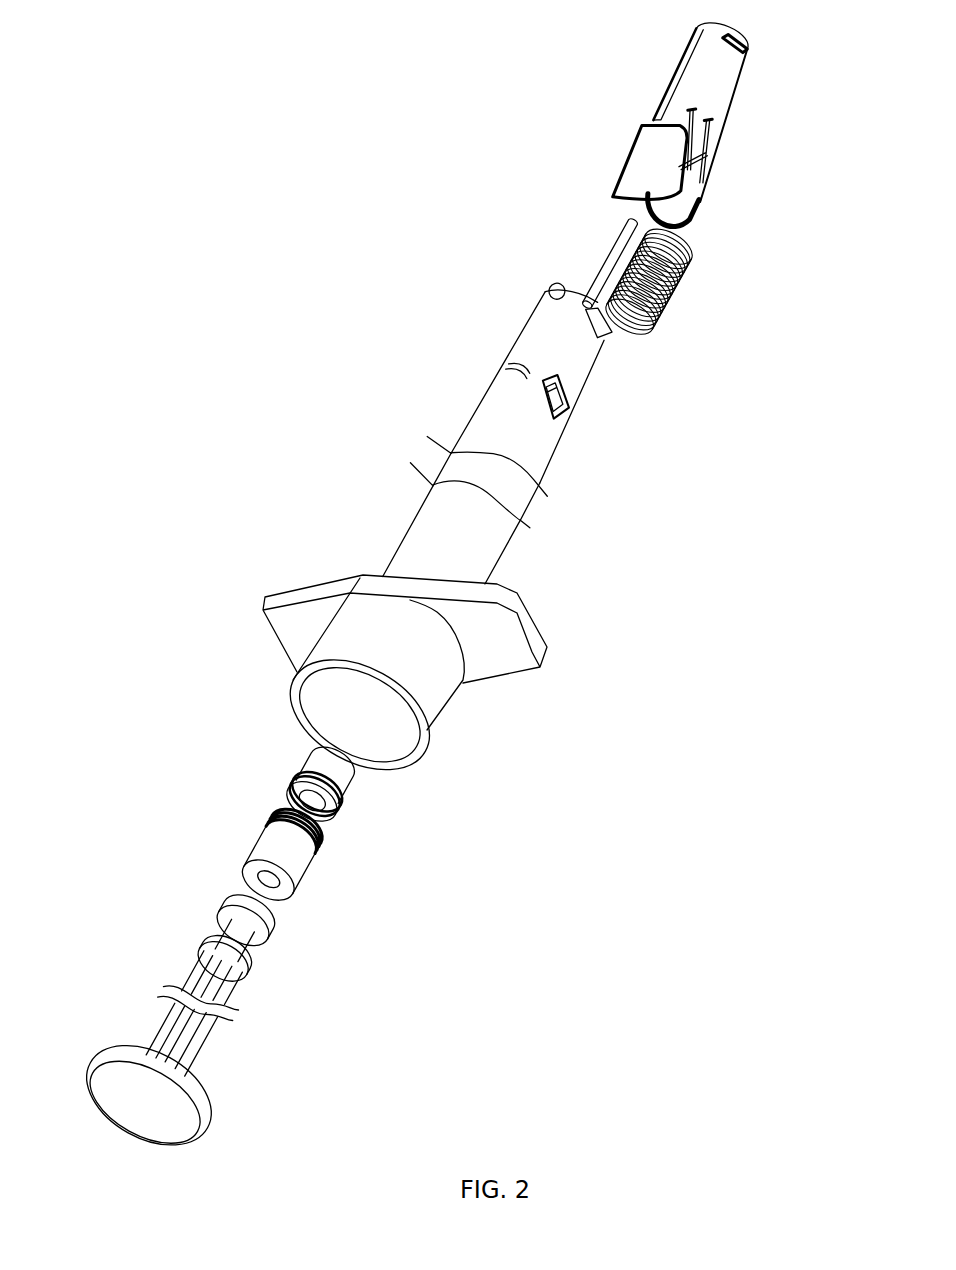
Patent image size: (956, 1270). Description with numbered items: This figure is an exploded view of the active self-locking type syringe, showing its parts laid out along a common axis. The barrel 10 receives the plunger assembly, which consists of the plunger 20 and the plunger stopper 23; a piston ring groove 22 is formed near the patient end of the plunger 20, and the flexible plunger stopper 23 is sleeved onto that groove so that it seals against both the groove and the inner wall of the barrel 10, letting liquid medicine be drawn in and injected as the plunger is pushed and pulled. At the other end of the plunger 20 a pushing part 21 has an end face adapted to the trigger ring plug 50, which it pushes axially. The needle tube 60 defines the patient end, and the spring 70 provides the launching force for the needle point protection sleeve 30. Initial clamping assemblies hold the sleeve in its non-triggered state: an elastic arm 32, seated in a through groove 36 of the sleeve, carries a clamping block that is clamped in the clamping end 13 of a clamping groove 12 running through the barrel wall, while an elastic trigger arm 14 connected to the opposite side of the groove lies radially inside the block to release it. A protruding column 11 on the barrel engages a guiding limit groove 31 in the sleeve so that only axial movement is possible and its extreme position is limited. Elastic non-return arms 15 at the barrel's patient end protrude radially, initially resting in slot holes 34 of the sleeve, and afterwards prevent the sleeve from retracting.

The barrel 10 is at (430, 550).
The protruding column 11 is at (550, 283).
The clamping groove 12 is at (535, 380).
The clamping end 13 is at (556, 393).
The trigger arm 14 is at (560, 418).
The non-return arm 15 is at (607, 338).
The plunger 20 is at (160, 1027).
The pushing part 21 is at (228, 898).
The piston ring groove 22 is at (217, 930).
The plunger stopper 23 is at (263, 847).
The needle point protection sleeve 30 is at (707, 90).
The guiding limit groove 31 is at (677, 72).
The elastic arm 32 is at (710, 137).
The slot hole 34 is at (745, 43).
The through groove 36 is at (696, 203).
The trigger ring plug 50 is at (297, 763).
The needle tube 60 is at (605, 258).
The spring 70 is at (663, 307).